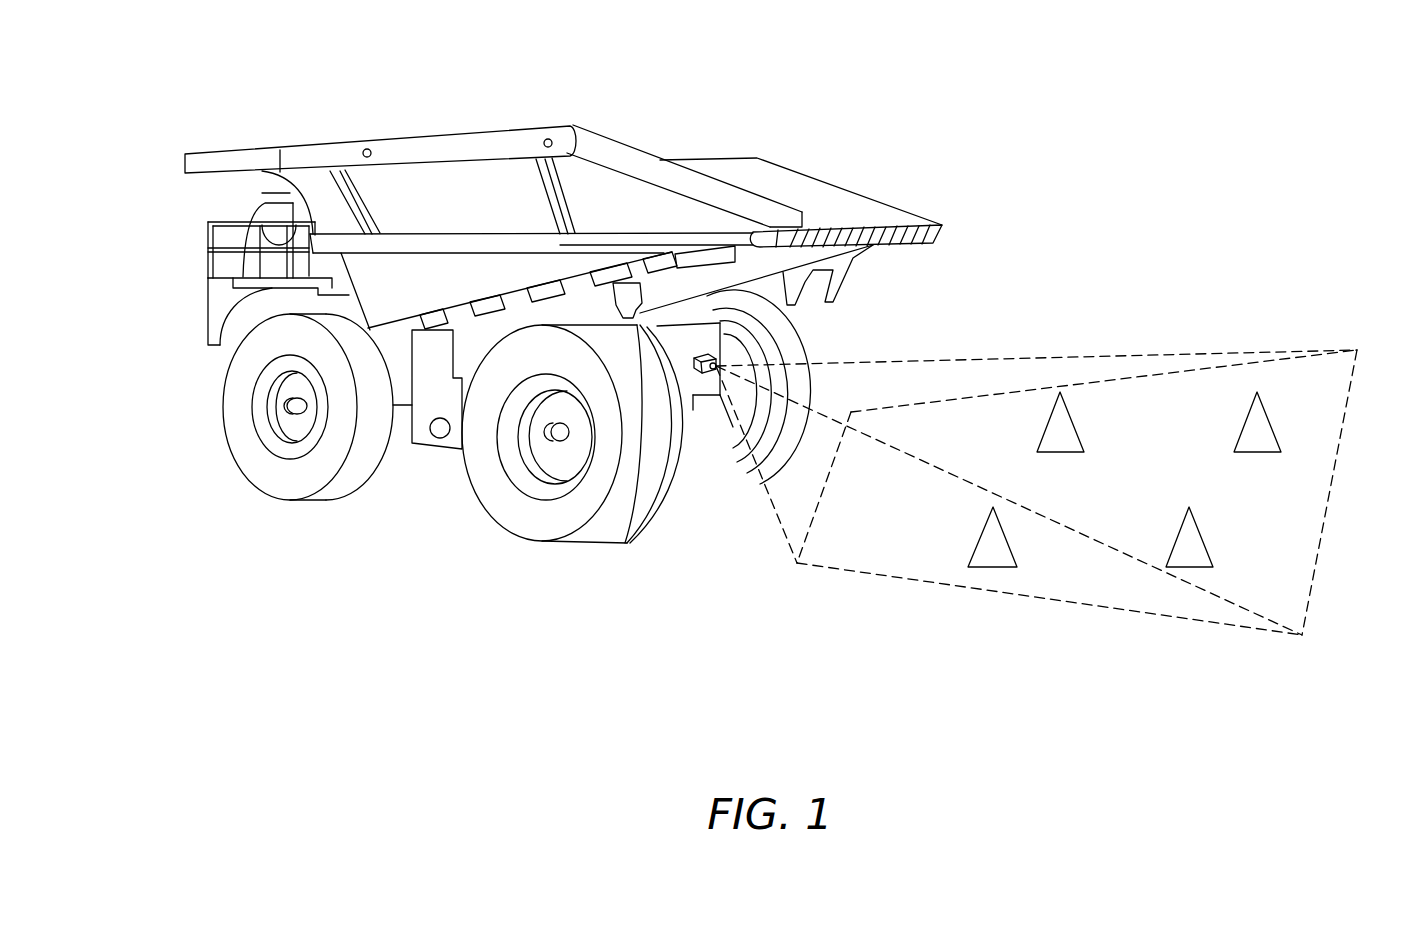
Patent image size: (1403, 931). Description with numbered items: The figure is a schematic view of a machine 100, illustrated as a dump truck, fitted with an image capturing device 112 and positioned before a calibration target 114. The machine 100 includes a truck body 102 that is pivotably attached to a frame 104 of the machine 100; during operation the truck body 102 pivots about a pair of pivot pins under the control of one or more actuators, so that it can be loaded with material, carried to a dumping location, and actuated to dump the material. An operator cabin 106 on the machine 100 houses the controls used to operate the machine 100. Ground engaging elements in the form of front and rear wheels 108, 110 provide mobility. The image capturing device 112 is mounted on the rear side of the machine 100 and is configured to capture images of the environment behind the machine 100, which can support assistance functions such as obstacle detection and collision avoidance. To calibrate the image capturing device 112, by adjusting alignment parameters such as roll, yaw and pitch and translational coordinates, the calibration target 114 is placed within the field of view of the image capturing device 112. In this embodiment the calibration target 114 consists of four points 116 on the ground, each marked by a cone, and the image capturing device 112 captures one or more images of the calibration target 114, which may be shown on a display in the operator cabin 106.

The machine 100 is at (1006, 132).
The truck body 102 is at (422, 183).
The frame 104 is at (257, 310).
The operator cabin 106 is at (262, 206).
The front wheels 108 is at (286, 494).
The rear wheels 110 is at (538, 540).
The image capturing device 112 is at (717, 358).
The calibration target 114 is at (1108, 316).
The points 116 is at (1273, 430).